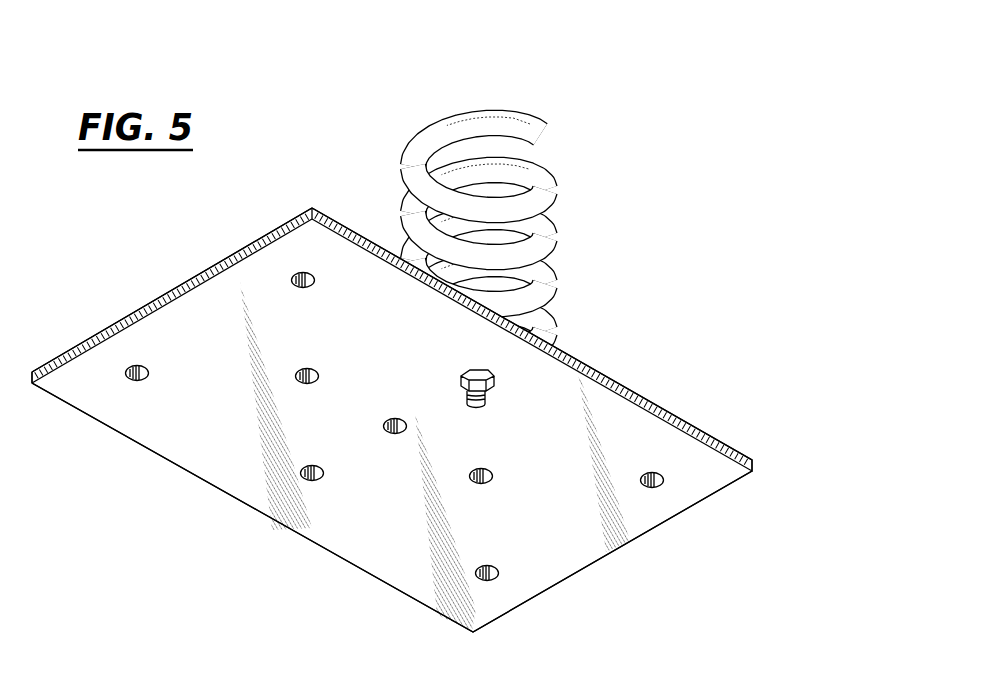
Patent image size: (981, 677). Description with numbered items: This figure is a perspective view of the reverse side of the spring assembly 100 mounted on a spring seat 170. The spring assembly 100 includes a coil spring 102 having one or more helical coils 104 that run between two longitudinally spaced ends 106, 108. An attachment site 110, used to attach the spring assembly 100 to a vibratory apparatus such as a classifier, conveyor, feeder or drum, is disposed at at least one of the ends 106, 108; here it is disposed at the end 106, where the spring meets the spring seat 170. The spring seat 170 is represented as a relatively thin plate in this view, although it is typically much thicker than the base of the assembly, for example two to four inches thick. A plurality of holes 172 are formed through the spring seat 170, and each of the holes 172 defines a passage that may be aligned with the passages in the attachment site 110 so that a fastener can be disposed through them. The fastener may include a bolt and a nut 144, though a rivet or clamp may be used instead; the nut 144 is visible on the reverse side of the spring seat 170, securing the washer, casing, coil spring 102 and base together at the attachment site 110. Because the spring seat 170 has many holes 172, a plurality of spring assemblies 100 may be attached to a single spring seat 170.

The spring assembly 100 is at (497, 239).
The coil spring 102 is at (479, 189).
The helical coils 104 is at (479, 236).
The end 106 is at (546, 331).
The end 108 is at (476, 142).
The attachment site 110 is at (548, 350).
The nut 144 is at (461, 383).
The spring seat 170 is at (392, 420).
The holes 172 is at (482, 485).